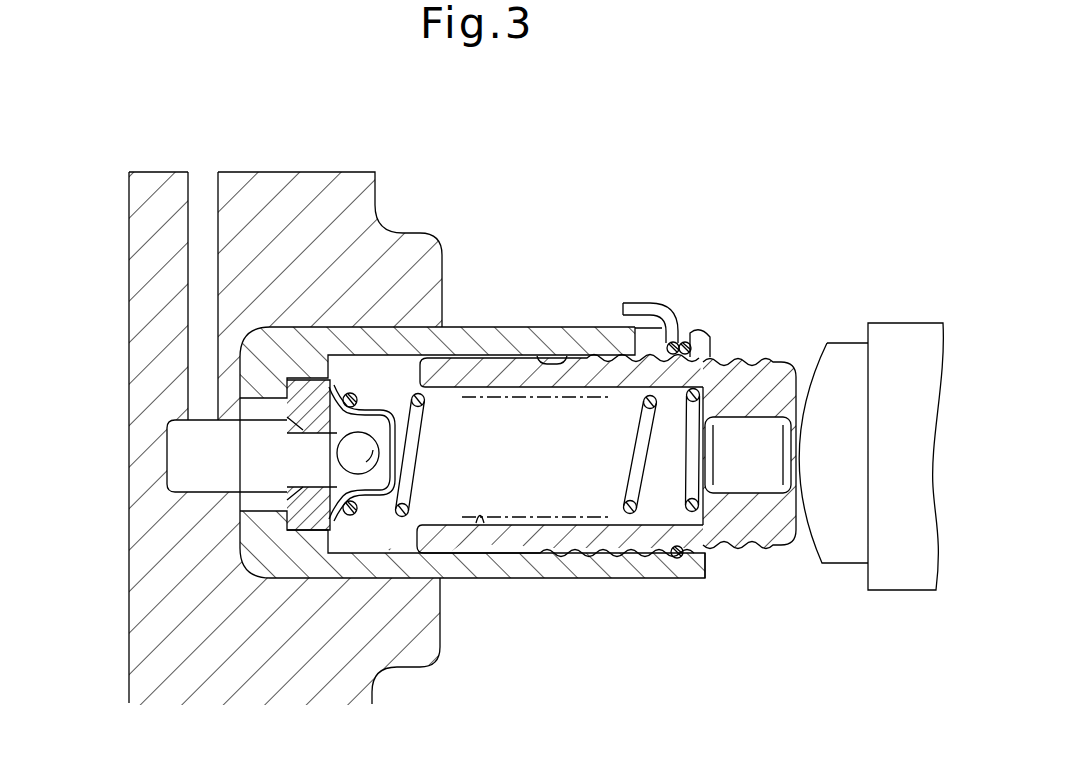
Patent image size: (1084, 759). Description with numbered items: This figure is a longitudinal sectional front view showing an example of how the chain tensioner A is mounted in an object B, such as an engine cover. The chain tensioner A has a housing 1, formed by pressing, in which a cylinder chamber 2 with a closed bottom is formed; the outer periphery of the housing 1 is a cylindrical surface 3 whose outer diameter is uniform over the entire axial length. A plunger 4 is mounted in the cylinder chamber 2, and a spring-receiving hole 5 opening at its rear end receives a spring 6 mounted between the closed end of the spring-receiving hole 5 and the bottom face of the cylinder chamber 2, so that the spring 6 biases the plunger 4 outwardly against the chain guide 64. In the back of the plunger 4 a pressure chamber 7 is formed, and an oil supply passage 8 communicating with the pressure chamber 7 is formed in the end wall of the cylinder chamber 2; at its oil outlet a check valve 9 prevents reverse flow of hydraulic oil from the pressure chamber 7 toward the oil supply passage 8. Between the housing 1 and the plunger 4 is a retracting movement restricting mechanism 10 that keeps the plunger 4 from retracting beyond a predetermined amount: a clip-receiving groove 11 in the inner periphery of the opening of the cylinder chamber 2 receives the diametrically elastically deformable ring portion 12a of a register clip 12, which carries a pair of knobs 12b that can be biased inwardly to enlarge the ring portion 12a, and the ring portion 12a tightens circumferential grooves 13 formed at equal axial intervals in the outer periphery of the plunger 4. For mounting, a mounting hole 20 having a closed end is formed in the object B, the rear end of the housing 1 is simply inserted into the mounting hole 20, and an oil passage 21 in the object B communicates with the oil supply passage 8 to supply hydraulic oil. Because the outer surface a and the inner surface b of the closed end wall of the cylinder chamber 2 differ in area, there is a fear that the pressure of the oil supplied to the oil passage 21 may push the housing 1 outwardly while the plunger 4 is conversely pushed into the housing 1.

The housing 1 is at (548, 327).
The cylinder chamber 2 is at (620, 547).
The cylindrical surface 3 is at (593, 327).
The plunger 4 is at (522, 540).
The spring-receiving hole 5 is at (482, 517).
The spring 6 is at (703, 510).
The pressure chamber 7 is at (378, 537).
The oil supply passage 8 is at (255, 415).
The check valve 9 is at (265, 452).
The retracting movement restricting mechanism 10 is at (688, 319).
The clip-receiving groove 11 is at (660, 560).
The register clip 12 is at (692, 345).
The ring portion 12a is at (682, 557).
The knobs 12b is at (645, 303).
The circumferential grooves 13 is at (583, 548).
The mounting hole 20 is at (374, 327).
The oil passage 21 is at (202, 193).
The chain guide 64 is at (898, 338).
The chain tensioner A is at (501, 317).
The object B is at (385, 178).
The outer surface a is at (245, 358).
The inner surface b is at (345, 338).